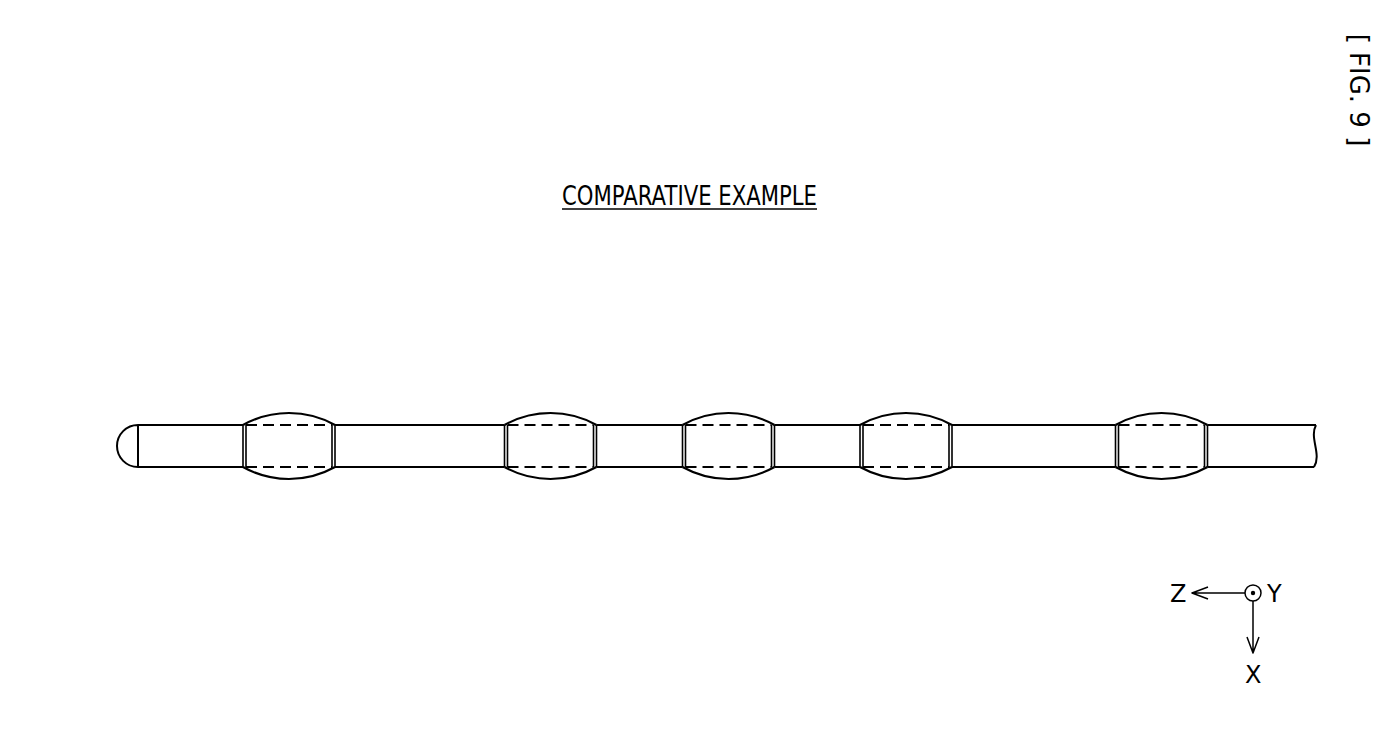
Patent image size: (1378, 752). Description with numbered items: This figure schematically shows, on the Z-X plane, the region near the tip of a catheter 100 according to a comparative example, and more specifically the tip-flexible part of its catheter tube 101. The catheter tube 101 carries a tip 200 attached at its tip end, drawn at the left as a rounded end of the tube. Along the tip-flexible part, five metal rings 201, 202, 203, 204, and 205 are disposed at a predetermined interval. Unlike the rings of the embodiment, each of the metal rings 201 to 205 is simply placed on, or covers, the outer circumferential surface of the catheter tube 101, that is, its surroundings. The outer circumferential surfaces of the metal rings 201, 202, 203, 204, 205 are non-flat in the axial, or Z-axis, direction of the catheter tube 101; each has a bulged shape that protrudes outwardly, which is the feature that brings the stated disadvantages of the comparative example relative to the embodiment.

The catheter 100 is at (1117, 293).
The catheter tube 101 is at (1258, 432).
The tip 200 is at (127, 456).
The metal ring 201 is at (288, 452).
The metal ring 202 is at (550, 452).
The metal ring 203 is at (728, 452).
The metal ring 204 is at (906, 452).
The metal ring 205 is at (1161, 452).